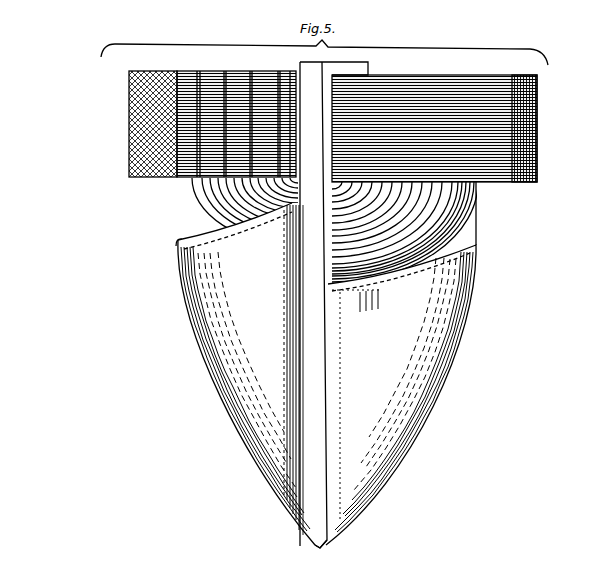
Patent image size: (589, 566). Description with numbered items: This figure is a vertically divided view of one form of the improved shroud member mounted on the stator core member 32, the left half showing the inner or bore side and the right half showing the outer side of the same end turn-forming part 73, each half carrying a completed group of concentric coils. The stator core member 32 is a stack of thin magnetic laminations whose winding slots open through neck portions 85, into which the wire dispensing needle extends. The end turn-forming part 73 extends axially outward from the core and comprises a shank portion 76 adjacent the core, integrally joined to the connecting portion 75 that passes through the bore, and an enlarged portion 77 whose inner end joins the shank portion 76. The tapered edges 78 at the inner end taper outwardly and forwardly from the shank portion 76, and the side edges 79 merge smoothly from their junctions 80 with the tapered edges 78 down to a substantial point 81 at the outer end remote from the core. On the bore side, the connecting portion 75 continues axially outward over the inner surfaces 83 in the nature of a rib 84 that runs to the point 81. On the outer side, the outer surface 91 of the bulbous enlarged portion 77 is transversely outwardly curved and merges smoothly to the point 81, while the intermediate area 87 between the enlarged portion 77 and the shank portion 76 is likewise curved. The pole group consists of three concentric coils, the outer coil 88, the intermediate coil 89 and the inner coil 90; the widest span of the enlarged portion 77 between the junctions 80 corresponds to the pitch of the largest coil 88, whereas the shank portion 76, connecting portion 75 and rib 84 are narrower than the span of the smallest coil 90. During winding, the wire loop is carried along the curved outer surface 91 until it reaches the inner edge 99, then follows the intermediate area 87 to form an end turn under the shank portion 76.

The stator core member 32 is at (540, 128).
The neck portions 85 is at (226, 74).
The connecting portion 75 is at (318, 77).
The shank portion 76 is at (292, 192).
The intermediate coil 89 is at (253, 187).
The outer coil 88 is at (200, 209).
The inner coil 90 is at (438, 192).
The intermediate area 87 is at (447, 243).
The junctions 80 is at (180, 240).
The tapered edges 78 is at (238, 233).
The side edges 79 is at (192, 340).
The inner surfaces 83 is at (245, 397).
The rib 84 is at (307, 458).
The end turn-forming part 73 is at (431, 395).
The enlarged portion 77 is at (467, 303).
The outer surface 91 is at (385, 445).
The inner edge 99 is at (378, 300).
The point 81 is at (326, 547).